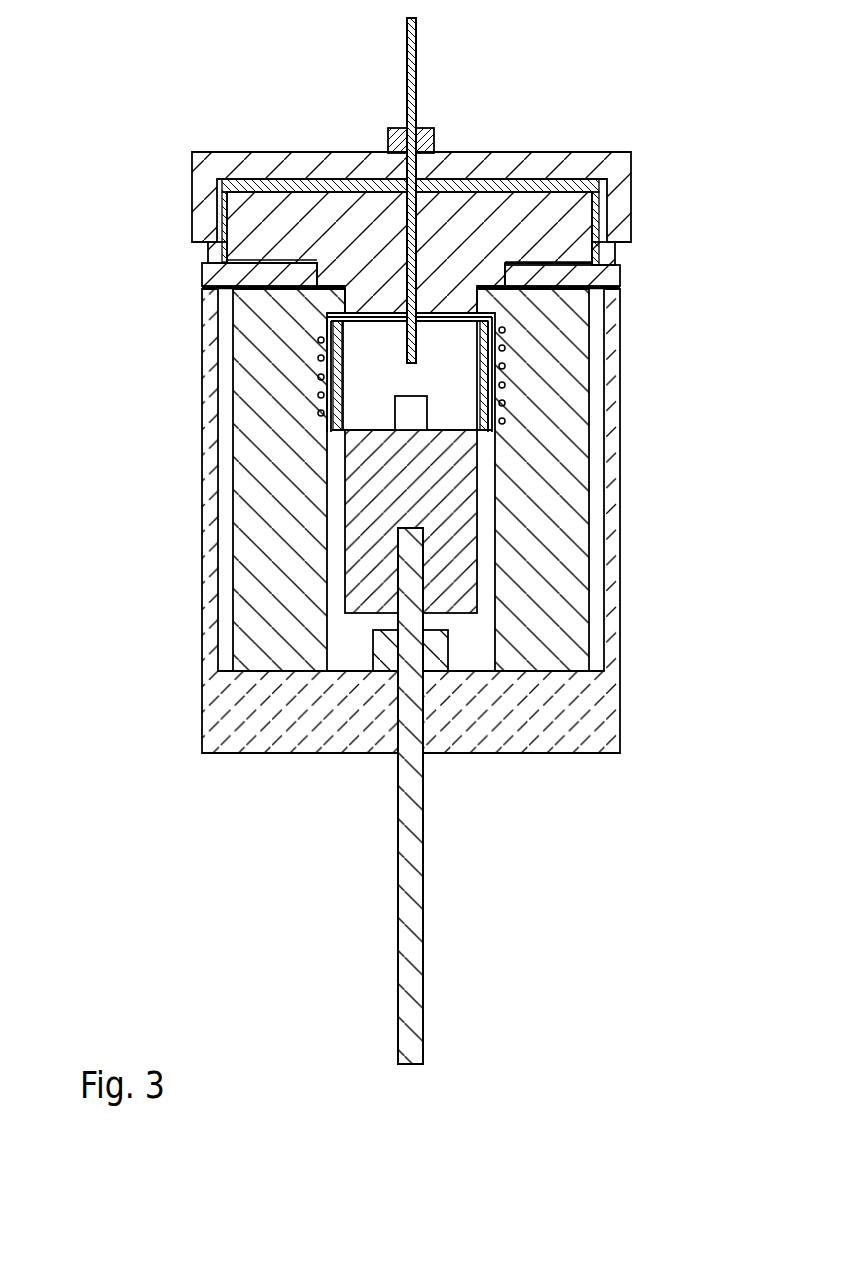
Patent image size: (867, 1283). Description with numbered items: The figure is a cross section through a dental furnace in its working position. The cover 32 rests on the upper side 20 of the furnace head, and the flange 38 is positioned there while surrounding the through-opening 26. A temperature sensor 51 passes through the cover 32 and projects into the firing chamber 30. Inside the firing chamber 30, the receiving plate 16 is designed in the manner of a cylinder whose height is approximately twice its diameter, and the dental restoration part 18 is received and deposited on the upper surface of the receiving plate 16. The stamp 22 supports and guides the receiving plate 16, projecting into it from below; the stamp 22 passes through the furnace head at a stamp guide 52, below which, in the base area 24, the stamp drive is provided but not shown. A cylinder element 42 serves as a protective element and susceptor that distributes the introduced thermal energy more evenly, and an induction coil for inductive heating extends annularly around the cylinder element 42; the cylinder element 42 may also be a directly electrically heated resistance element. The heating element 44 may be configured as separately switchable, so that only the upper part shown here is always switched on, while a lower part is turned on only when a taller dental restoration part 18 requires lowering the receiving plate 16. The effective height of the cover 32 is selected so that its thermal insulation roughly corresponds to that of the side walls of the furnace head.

The receiving plate 16 is at (440, 491).
The dental restoration part 18 is at (412, 412).
The upper side 20 is at (273, 250).
The stamp 22 is at (410, 920).
The base area 24 is at (290, 980).
The through-opening 26 is at (371, 288).
The firing chamber 30 is at (462, 378).
The cover 32 is at (527, 208).
The flange 38 is at (580, 223).
The cylinder element 42 is at (490, 343).
The heating element 44 is at (320, 377).
The temperature sensor 51 is at (416, 44).
The stamp guide 52 is at (385, 765).